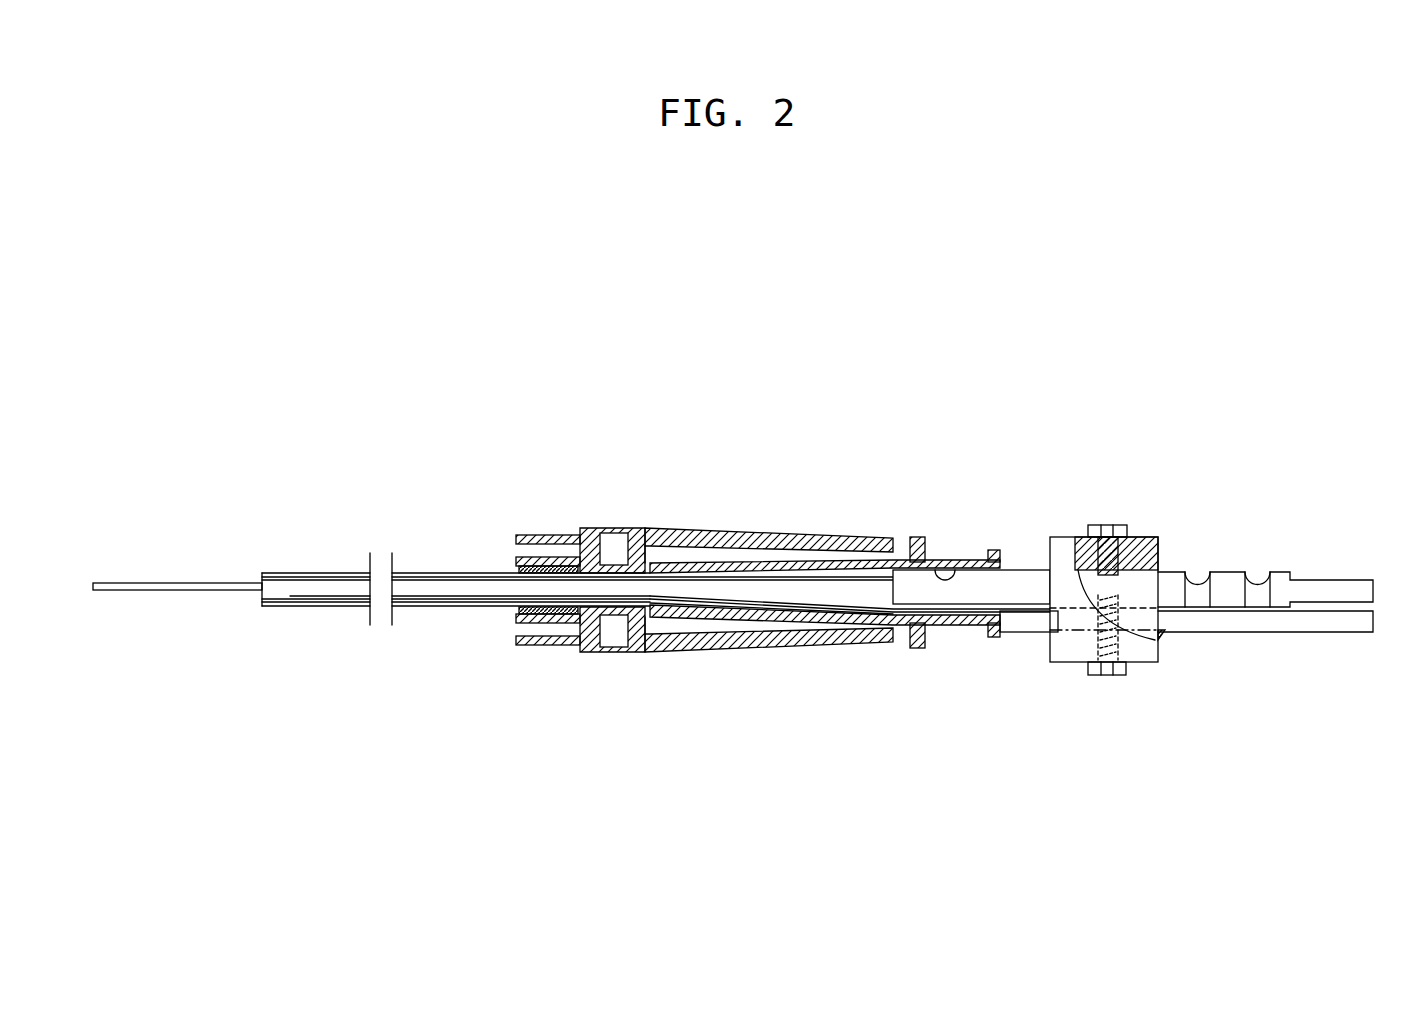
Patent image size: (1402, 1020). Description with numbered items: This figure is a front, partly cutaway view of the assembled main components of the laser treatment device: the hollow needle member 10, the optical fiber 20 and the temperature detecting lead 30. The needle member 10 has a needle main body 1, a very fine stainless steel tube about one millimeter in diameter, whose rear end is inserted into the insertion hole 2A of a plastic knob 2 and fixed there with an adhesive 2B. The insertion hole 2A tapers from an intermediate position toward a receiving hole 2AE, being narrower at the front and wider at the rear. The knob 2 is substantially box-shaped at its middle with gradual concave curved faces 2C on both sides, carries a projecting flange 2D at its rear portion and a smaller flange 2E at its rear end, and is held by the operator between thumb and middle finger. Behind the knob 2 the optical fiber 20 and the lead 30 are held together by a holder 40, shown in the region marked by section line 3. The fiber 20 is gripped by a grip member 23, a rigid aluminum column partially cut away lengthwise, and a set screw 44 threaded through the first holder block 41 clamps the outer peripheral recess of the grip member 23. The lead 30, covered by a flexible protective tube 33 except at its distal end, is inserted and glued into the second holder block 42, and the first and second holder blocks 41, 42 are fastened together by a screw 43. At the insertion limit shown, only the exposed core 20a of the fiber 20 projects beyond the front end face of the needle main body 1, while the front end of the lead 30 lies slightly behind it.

The needle main body 1 is at (333, 574).
The knob 2 is at (694, 530).
The insertion hole 2A is at (828, 573).
The receiving hole 2AE is at (956, 568).
The adhesive 2B is at (548, 632).
The tapered housing wall 2C is at (763, 540).
The flange 2D is at (917, 648).
The smaller flange 2E is at (992, 640).
The section line III-III 3 is at (1110, 448).
The needle member 10 is at (721, 564).
The optical fiber 20 is at (452, 565).
The core 20a is at (178, 586).
The grip member 23 is at (1227, 583).
The temperature detecting lead 30 is at (455, 605).
The protective tube 33 is at (1265, 627).
The holder 40 is at (1148, 537).
The first holder block 41 is at (1052, 550).
The second holder block 42 is at (1062, 655).
The screw 43 is at (1108, 676).
The set screw 44 is at (1108, 530).